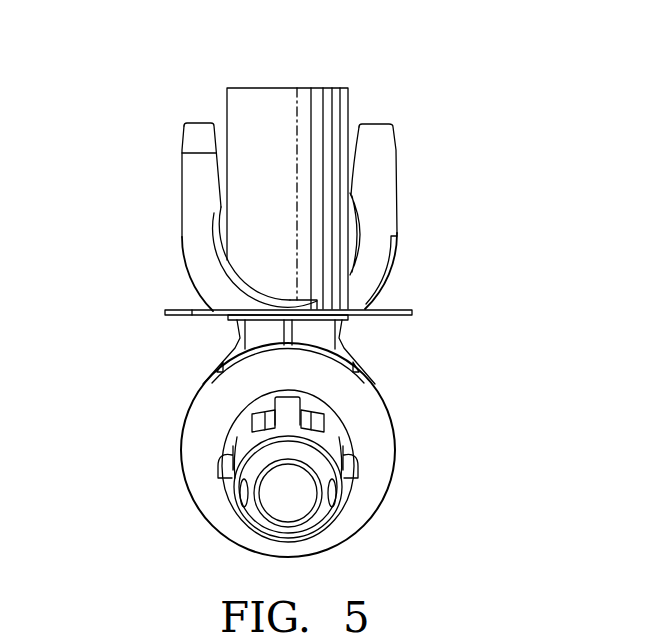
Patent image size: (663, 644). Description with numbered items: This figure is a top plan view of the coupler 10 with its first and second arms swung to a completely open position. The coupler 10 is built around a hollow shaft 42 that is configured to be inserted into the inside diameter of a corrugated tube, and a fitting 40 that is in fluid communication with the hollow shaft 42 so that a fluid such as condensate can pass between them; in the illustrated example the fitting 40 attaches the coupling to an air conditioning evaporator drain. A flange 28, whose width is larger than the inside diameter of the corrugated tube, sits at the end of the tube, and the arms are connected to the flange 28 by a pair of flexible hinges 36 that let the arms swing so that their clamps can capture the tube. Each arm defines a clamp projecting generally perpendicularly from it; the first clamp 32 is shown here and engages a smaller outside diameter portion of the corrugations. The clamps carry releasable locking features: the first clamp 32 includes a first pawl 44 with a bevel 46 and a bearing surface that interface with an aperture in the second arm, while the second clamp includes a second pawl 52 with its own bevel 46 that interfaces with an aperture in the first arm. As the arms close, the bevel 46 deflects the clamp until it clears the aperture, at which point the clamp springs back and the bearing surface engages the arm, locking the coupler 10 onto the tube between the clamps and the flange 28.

The coupler 10 is at (438, 55).
The flange 28 is at (187, 315).
The first clamp 32 is at (387, 218).
The flexible hinges 36 is at (183, 235).
The fitting 40 is at (232, 503).
The hollow shaft 42 is at (252, 97).
The first pawl 44 is at (385, 132).
The bevel 46 is at (197, 129).
The second pawl 52 is at (180, 140).